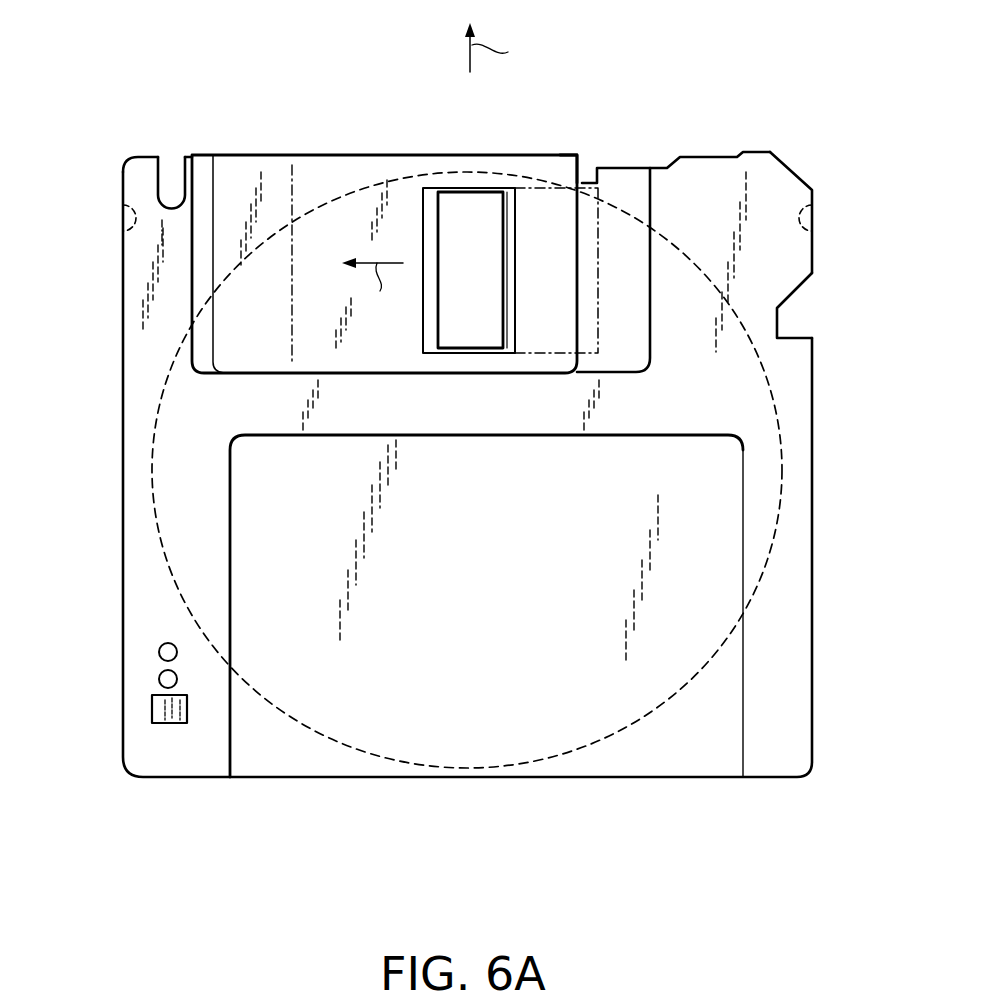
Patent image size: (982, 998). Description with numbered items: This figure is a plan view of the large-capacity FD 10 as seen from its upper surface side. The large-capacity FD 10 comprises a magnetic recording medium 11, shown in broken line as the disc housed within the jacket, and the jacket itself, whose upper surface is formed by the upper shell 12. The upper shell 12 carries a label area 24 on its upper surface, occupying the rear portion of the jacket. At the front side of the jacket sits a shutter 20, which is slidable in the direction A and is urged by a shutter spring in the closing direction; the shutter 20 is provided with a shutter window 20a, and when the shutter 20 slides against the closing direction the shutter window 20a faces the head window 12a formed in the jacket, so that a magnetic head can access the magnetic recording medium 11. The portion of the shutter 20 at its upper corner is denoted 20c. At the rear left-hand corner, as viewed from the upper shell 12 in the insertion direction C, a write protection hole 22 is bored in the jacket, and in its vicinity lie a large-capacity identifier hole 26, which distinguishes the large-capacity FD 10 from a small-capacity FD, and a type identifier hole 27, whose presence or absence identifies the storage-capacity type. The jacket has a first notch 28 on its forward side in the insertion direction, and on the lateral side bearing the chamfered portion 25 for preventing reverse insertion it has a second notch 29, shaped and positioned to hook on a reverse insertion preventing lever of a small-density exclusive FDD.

The large-capacity FD 10 is at (180, 783).
The magnetic recording medium 11 is at (783, 590).
The upper shell 12 is at (800, 510).
The head window 12a is at (498, 212).
The shutter 20 is at (380, 357).
The shutter window 20a is at (507, 352).
The shutter top portion 20c is at (580, 157).
The write protection hole 22 is at (150, 709).
The label area 24 is at (693, 757).
The chamfered portion 25 is at (790, 168).
The large-capacity identifier hole 26 is at (158, 680).
The type identifier hole 27 is at (158, 652).
The first notch 28 is at (172, 173).
The second notch 29 is at (792, 320).